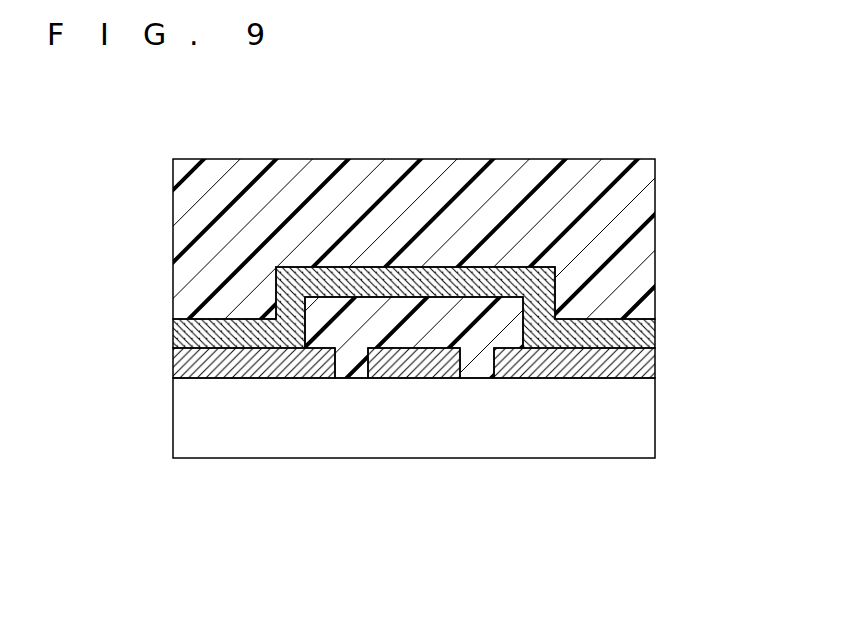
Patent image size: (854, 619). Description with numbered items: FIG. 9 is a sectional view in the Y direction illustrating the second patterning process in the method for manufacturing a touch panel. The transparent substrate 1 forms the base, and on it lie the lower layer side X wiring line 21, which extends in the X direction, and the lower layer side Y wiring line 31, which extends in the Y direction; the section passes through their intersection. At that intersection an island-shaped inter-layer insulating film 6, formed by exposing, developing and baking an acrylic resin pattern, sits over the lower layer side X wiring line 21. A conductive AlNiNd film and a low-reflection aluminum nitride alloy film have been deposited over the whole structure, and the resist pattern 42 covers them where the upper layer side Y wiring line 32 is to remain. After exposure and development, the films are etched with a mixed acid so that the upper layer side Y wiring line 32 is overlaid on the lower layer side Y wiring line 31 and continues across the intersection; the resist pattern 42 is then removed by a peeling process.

The transparent substrate 1 is at (636, 424).
The inter-layer insulating film 6 is at (350, 328).
The lower layer side X wiring line 21 is at (427, 363).
The lower layer side Y wiring line 31 is at (652, 366).
The upper layer side Y wiring line 32 is at (529, 268).
The resist pattern 42 is at (268, 193).